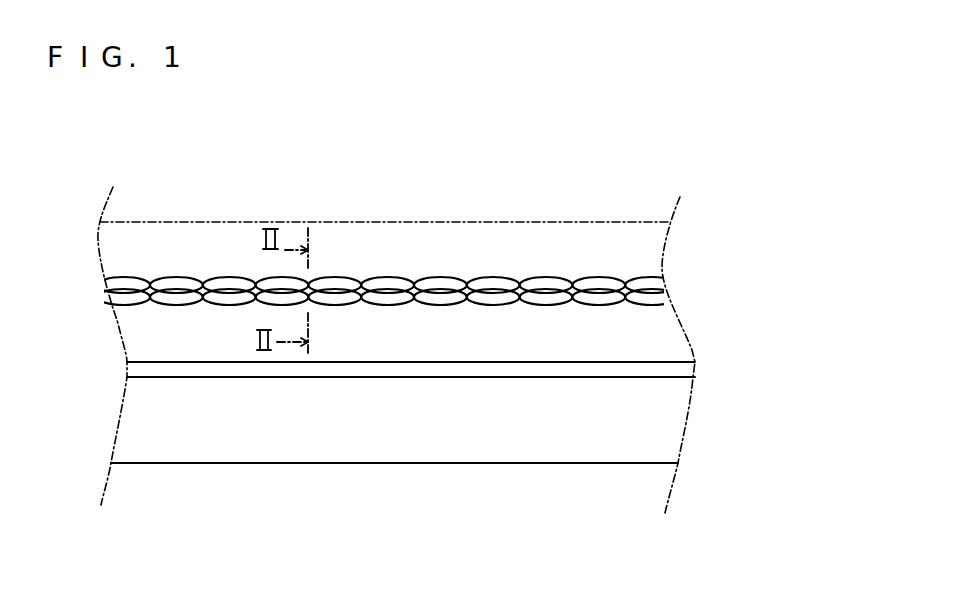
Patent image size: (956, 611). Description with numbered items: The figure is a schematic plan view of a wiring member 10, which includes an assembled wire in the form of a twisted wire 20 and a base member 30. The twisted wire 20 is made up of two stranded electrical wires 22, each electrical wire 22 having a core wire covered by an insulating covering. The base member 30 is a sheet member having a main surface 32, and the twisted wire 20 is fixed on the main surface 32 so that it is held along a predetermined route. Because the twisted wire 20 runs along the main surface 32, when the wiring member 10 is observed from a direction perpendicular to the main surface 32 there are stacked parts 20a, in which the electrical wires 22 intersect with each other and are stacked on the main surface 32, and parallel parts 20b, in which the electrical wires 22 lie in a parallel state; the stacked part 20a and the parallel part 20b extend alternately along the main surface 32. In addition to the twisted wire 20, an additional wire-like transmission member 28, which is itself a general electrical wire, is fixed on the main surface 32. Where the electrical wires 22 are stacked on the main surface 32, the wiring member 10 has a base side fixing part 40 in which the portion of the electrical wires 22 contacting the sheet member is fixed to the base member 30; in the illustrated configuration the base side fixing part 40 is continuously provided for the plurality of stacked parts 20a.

The wiring member 10 is at (498, 192).
The twisted wire 20 is at (548, 273).
The stacked part 20a is at (148, 303).
The parallel part 20b is at (175, 277).
The electrical wire 22 is at (555, 303).
The additional wire-like transmission member 28 is at (517, 377).
The base member 30 is at (555, 465).
The main surface 32 is at (607, 442).
The base side fixing part 40 is at (157, 277).